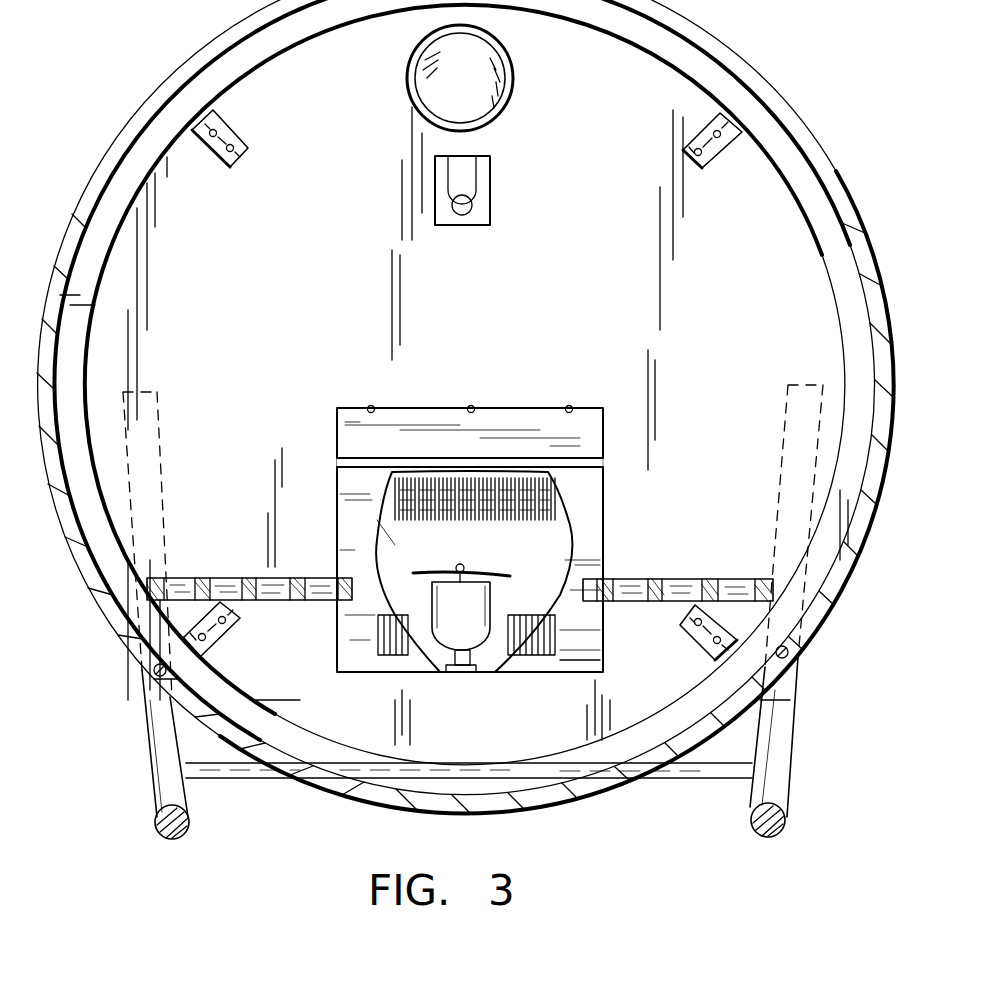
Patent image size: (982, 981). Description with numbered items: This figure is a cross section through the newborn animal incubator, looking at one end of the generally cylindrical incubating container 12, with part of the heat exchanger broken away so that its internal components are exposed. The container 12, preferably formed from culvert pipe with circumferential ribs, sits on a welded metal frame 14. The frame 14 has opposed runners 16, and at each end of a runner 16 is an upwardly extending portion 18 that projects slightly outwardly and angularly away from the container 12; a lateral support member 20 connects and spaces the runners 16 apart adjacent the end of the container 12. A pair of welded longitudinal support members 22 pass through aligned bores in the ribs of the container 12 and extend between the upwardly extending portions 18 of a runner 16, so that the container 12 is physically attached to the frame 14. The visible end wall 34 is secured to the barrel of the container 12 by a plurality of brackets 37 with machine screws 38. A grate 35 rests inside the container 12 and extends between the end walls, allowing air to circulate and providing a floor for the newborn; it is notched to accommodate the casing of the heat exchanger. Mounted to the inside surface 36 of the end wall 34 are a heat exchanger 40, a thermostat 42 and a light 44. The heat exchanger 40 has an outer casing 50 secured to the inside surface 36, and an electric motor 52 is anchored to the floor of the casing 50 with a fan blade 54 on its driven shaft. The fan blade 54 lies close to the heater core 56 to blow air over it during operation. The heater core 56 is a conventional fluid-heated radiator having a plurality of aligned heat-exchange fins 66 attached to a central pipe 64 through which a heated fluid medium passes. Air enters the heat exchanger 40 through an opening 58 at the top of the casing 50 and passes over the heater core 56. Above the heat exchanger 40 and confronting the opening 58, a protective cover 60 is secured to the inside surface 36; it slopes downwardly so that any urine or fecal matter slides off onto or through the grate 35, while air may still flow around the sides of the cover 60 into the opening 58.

The incubating container 12 is at (93, 585).
The frame 14 is at (786, 822).
The runner 16 is at (178, 838).
The upwardly extending portion 18 is at (158, 752).
The lateral support member 20 is at (692, 780).
The longitudinal support member 22 is at (153, 672).
The end wall 34 is at (128, 235).
The grate 35 is at (225, 578).
The inside surface 36 is at (206, 237).
The bracket 37 is at (230, 167).
The machine screw 38 is at (250, 142).
The heat exchanger 40 is at (325, 466).
The thermostat 42 is at (490, 170).
The light 44 is at (514, 88).
The outer casing 50 is at (603, 547).
The electric motor 52 is at (488, 612).
The fan blade 54 is at (505, 572).
The heater core 56 is at (395, 505).
The opening 58 is at (545, 466).
The protective cover 60 is at (603, 420).
The central pipe 64 is at (378, 542).
The heat-exchange fin 66 is at (420, 522).